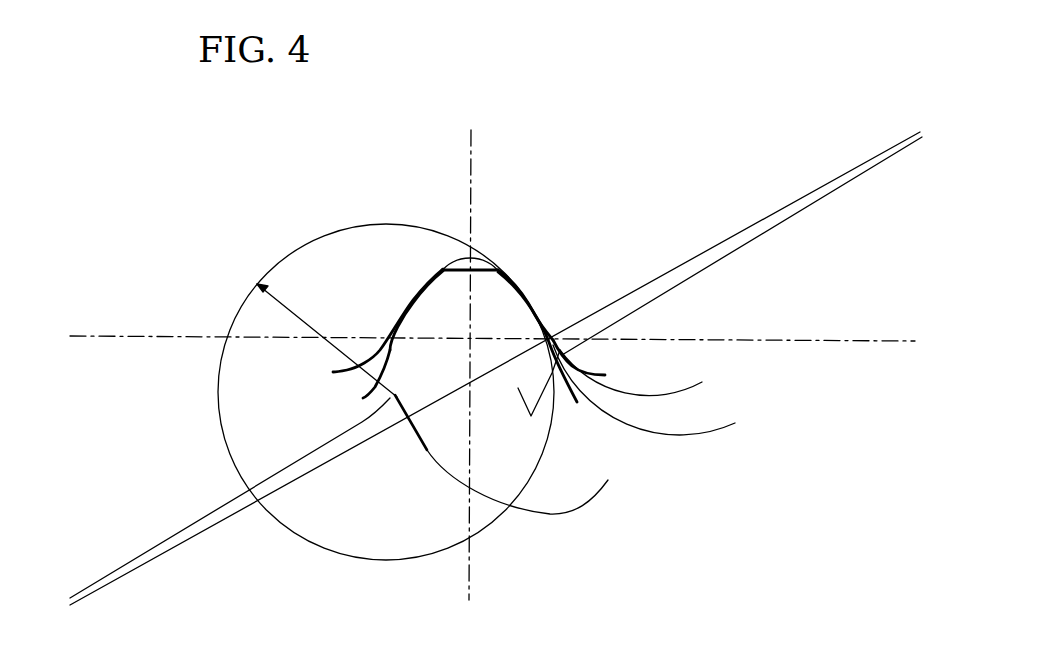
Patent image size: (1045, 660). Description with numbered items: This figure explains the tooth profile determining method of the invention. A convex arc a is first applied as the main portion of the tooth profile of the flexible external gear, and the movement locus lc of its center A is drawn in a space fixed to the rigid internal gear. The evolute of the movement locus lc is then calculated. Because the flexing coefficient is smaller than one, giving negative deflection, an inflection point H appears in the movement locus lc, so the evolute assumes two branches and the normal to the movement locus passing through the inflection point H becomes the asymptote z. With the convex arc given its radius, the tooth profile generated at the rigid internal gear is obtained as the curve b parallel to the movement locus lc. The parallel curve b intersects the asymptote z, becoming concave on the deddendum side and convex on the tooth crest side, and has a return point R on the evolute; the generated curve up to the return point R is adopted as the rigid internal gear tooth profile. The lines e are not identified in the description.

The asymptote z is at (612, 303).
The reference line e is at (187, 527).
The parallel curve b is at (527, 307).
The convex arc a is at (499, 277).
The center of the convex arc A is at (380, 374).
The inflection point H is at (410, 426).
The movement locus lc is at (541, 513).
The return point R is at (579, 357).